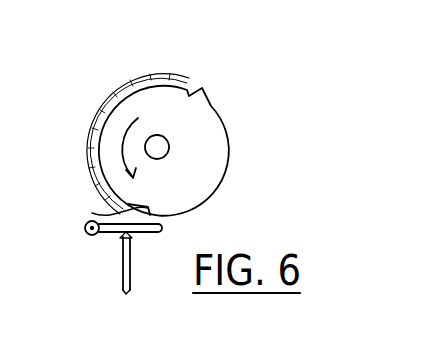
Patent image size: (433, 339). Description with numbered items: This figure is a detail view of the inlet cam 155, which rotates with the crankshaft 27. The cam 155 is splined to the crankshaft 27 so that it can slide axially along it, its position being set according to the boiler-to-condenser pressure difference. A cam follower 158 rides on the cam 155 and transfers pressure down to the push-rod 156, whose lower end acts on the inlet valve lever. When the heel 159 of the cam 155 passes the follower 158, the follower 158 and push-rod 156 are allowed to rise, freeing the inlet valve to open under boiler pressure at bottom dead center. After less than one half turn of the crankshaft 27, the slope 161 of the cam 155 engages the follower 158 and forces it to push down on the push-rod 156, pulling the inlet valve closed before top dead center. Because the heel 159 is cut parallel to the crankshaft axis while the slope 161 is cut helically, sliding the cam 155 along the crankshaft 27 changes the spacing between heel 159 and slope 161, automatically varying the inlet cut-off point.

The cam 155 is at (229, 128).
The slope 161 is at (110, 100).
The crankshaft 27 is at (169, 148).
The heel 159 is at (101, 211).
The cam follower 158 is at (163, 236).
The push-rod 156 is at (128, 280).